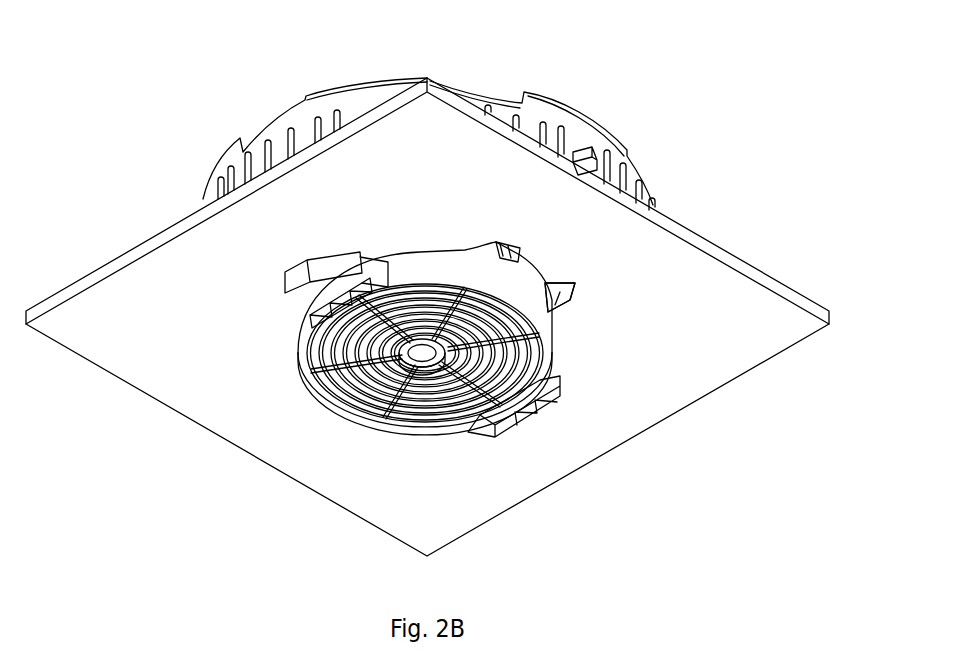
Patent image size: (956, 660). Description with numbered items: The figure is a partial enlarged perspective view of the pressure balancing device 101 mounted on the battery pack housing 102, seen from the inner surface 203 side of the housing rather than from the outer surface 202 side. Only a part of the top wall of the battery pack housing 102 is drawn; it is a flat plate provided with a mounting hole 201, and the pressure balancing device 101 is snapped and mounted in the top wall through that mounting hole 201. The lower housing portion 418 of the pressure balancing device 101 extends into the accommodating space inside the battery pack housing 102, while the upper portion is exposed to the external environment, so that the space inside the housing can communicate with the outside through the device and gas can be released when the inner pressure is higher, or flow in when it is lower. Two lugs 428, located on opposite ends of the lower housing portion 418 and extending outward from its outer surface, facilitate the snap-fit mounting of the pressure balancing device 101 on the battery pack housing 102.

The pressure balancing device 101 is at (362, 105).
The battery pack housing 102 is at (140, 303).
The mounting hole 201 is at (572, 292).
The outer surface 202 is at (712, 202).
The inner surface 203 is at (218, 400).
The lower housing portion 418 is at (447, 270).
The lug 428 is at (510, 425).